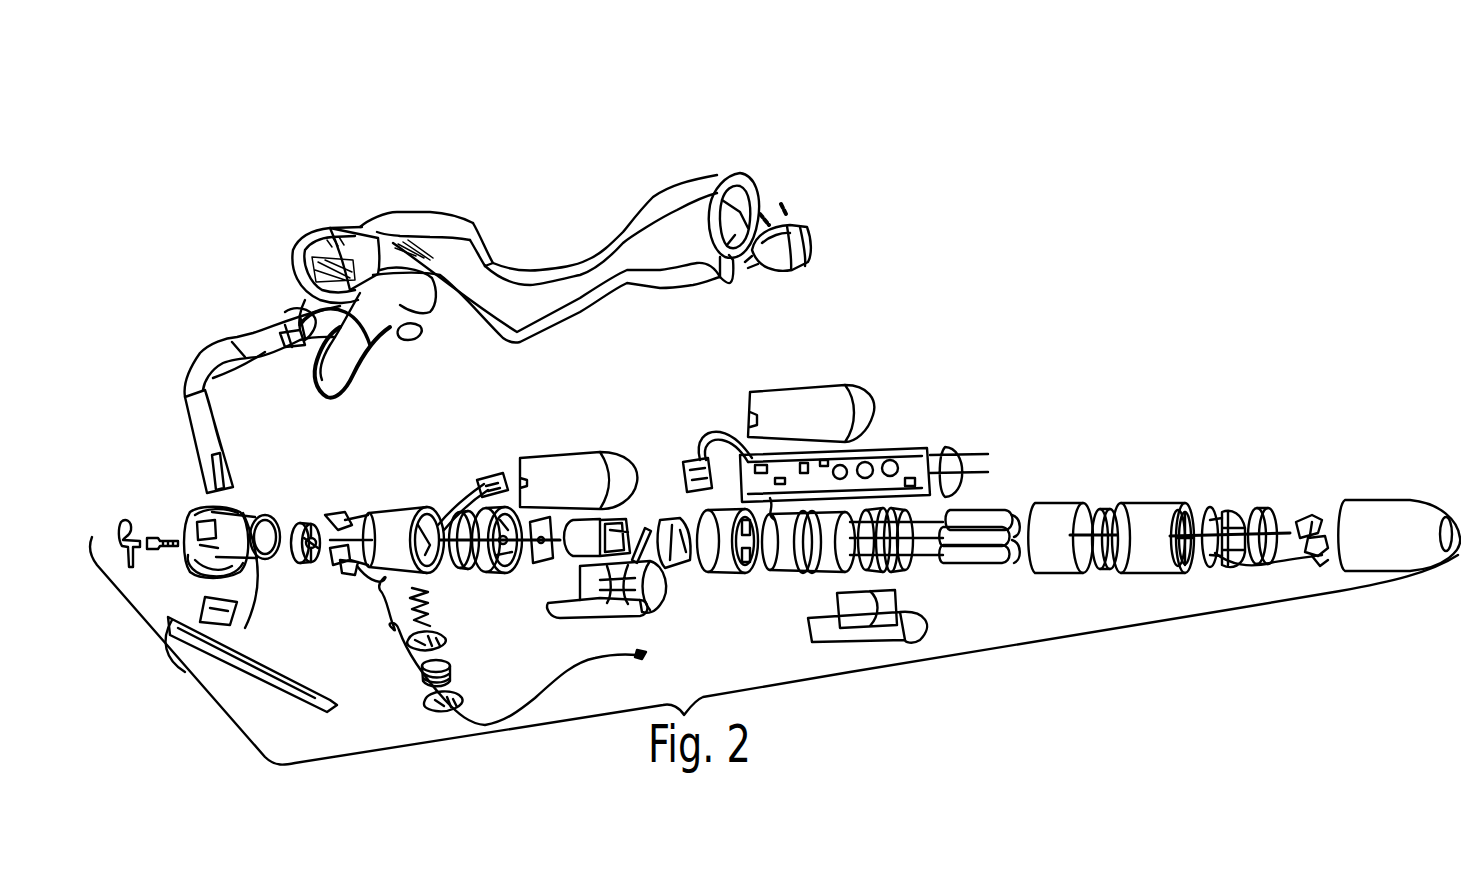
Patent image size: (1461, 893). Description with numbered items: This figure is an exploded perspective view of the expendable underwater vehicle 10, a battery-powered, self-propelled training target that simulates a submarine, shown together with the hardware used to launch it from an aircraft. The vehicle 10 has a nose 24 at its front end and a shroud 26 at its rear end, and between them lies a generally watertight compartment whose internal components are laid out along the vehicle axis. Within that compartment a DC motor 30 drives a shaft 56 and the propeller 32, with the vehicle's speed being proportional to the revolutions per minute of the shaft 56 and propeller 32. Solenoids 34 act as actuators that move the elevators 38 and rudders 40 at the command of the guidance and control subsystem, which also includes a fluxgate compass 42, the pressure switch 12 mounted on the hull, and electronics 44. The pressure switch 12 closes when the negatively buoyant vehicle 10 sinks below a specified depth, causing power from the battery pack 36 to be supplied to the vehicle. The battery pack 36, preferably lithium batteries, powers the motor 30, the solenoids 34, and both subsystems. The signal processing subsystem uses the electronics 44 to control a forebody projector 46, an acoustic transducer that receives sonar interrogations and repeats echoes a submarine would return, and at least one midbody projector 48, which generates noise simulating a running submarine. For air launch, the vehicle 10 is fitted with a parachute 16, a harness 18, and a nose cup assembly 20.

The expendable underwater vehicle 10 is at (1057, 300).
The pressure switch 12 is at (492, 572).
The parachute 16 is at (223, 333).
The harness 18 is at (412, 222).
The nose cup assembly 20 is at (805, 260).
The nose 24 is at (1370, 507).
The shroud 26 is at (180, 537).
The DC motor 30 is at (613, 520).
The propeller 32 is at (125, 520).
The solenoids 34 is at (335, 517).
The battery pack 36 is at (980, 553).
The elevators 38 is at (182, 550).
The rudders 40 is at (182, 530).
The fluxgate compass 42 is at (1322, 560).
The electronics 44 is at (907, 448).
The forebody projector 46 is at (1147, 560).
The midbody projector 48 is at (808, 563).
The shaft 56 is at (157, 553).